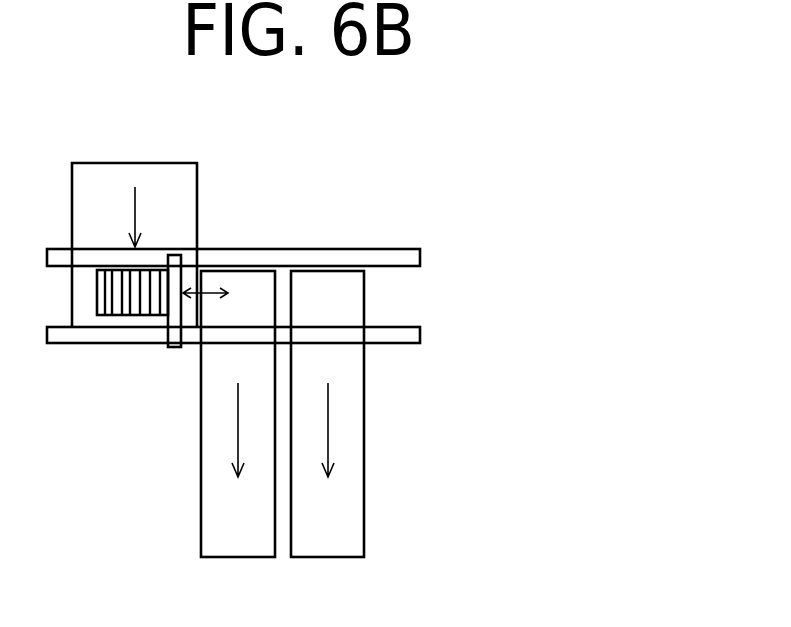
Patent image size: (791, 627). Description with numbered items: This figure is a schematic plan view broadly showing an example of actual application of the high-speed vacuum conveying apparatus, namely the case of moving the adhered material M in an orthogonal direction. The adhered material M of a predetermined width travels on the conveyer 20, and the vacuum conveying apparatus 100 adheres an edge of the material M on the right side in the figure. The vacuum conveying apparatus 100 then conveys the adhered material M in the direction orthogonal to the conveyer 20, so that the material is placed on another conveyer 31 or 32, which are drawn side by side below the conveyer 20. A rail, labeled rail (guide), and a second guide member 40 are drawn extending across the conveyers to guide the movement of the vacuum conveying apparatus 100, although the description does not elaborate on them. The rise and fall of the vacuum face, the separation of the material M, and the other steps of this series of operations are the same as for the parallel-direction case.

The conveyer 20 is at (127, 163).
The rail (guide) rail is at (420, 257).
The lower rail / guide 40 is at (420, 335).
The adhered material M is at (107, 316).
The vacuum conveying apparatus 100 is at (175, 348).
The conveyer 31 is at (200, 527).
The conveyer 32 is at (364, 448).